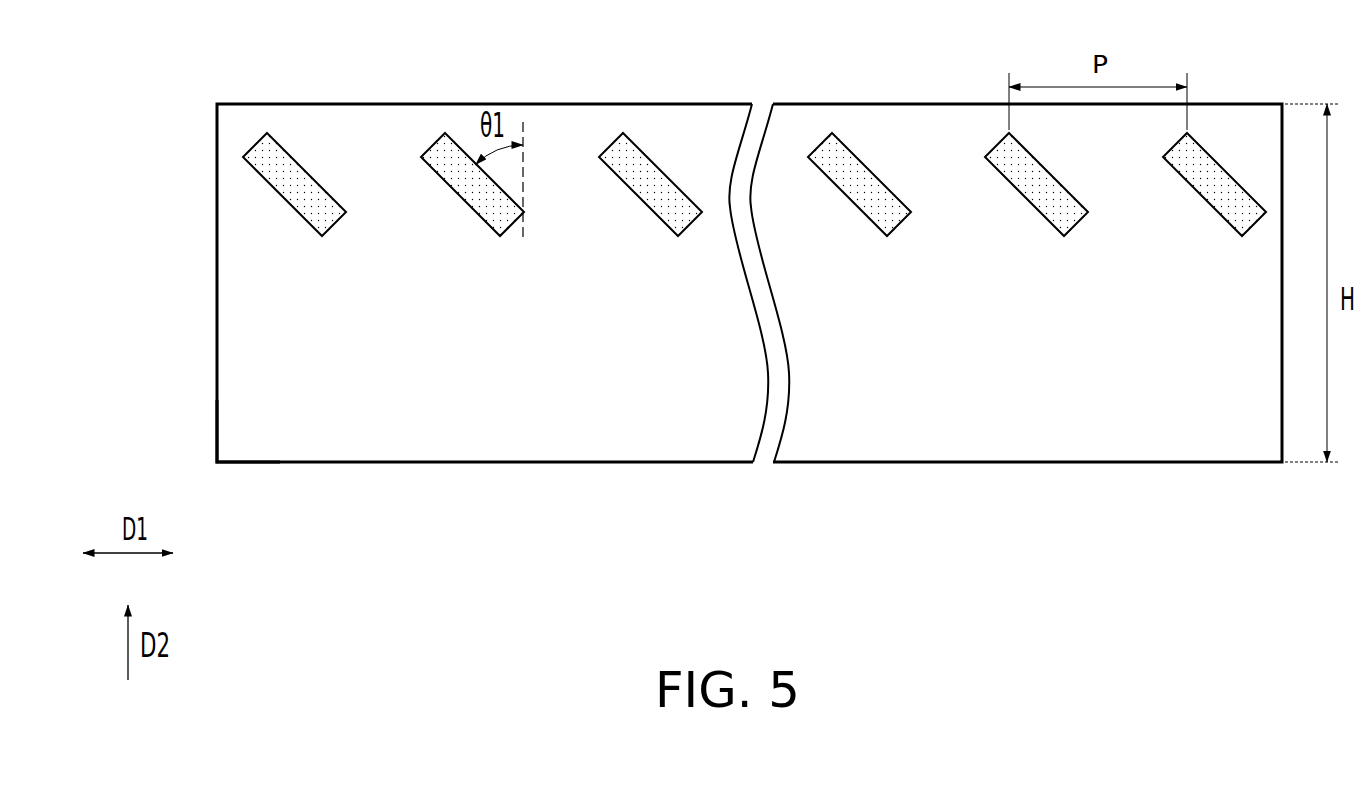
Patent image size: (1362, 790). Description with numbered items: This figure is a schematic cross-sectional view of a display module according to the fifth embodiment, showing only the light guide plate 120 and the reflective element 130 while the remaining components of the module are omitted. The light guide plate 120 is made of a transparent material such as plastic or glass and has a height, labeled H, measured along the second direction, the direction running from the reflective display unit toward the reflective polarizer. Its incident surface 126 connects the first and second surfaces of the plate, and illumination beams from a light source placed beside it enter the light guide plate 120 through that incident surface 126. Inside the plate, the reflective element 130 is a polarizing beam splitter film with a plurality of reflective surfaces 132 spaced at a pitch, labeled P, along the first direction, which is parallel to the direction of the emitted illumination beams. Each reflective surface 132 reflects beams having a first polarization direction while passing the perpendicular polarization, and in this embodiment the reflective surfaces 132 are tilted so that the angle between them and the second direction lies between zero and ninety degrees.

The light guide plate 120 is at (235, 340).
The incident surface 126 is at (219, 424).
The reflective element 130 is at (766, 135).
The reflective surface 132 is at (1203, 147).